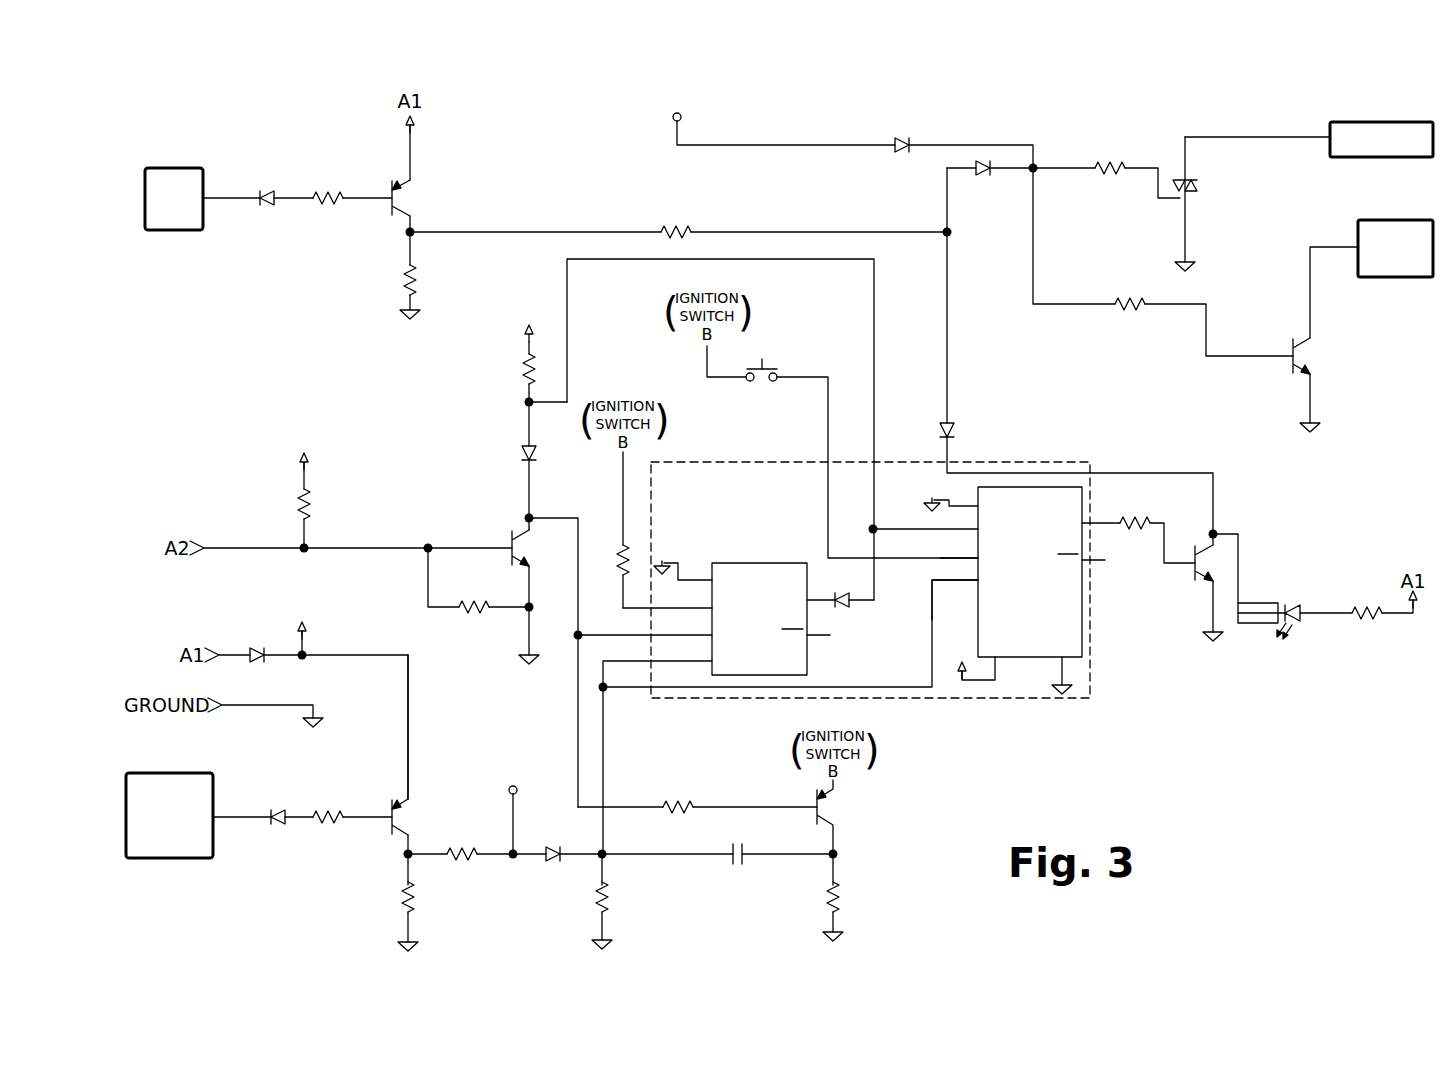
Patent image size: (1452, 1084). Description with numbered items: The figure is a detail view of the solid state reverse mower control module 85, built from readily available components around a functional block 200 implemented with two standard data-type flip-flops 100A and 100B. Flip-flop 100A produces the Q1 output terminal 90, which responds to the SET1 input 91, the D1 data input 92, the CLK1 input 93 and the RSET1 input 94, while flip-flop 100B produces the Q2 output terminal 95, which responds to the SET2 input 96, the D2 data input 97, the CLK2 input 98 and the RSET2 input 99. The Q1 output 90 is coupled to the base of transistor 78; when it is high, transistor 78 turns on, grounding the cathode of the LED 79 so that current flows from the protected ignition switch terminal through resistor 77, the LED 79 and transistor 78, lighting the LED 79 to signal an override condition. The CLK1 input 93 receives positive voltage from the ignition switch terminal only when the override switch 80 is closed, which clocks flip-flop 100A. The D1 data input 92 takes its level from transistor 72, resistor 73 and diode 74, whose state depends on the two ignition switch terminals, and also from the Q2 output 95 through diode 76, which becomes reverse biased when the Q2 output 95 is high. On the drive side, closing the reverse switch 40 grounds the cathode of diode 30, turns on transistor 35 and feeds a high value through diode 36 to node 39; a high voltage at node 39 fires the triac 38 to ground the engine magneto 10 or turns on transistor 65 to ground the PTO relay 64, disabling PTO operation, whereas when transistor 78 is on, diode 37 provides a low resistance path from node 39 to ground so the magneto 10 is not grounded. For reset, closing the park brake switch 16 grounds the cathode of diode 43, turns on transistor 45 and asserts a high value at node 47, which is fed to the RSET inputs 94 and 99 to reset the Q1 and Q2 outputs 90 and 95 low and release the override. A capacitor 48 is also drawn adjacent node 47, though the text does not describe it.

The engine magneto 10 is at (1348, 122).
The park brake switch 16 is at (178, 773).
The diode 30 is at (268, 190).
The transistor 35 is at (388, 194).
The diode 36 is at (983, 175).
The diode 37 is at (946, 422).
The triac 38 is at (1186, 178).
The node 39 is at (945, 230).
The reverse switch 40 is at (176, 168).
The diode 43 is at (280, 809).
The transistor 45 is at (390, 812).
The node 47 is at (604, 852).
The capacitor 48 is at (733, 852).
The PTO relay 64 is at (1388, 220).
The transistor 65 is at (1292, 348).
The transistor 72 is at (510, 543).
The resistor 73 is at (527, 365).
The diode 74 is at (524, 452).
The diode 76 is at (846, 606).
The resistor 77 is at (1360, 606).
The transistor 78 is at (1190, 558).
The LED 79 is at (1302, 628).
The override switch 80 is at (766, 364).
The RMC module 85 is at (723, 114).
The Q1 output terminal 90 is at (1090, 520).
The SET1 input 91 is at (975, 504).
The D1 data input 92 is at (978, 529).
The CLK1 input 93 is at (978, 558).
The RSET1 input 94 is at (978, 580).
The Q2 output terminal 95 is at (810, 600).
The SET2 input 96 is at (710, 578).
The D2 data input 97 is at (712, 607).
The CLK2 input 98 is at (712, 634).
The RSET2 input 99 is at (712, 660).
The data flip-flop 100A is at (1030, 487).
The data flip-flop 100B is at (790, 562).
The functional block 200 is at (983, 462).